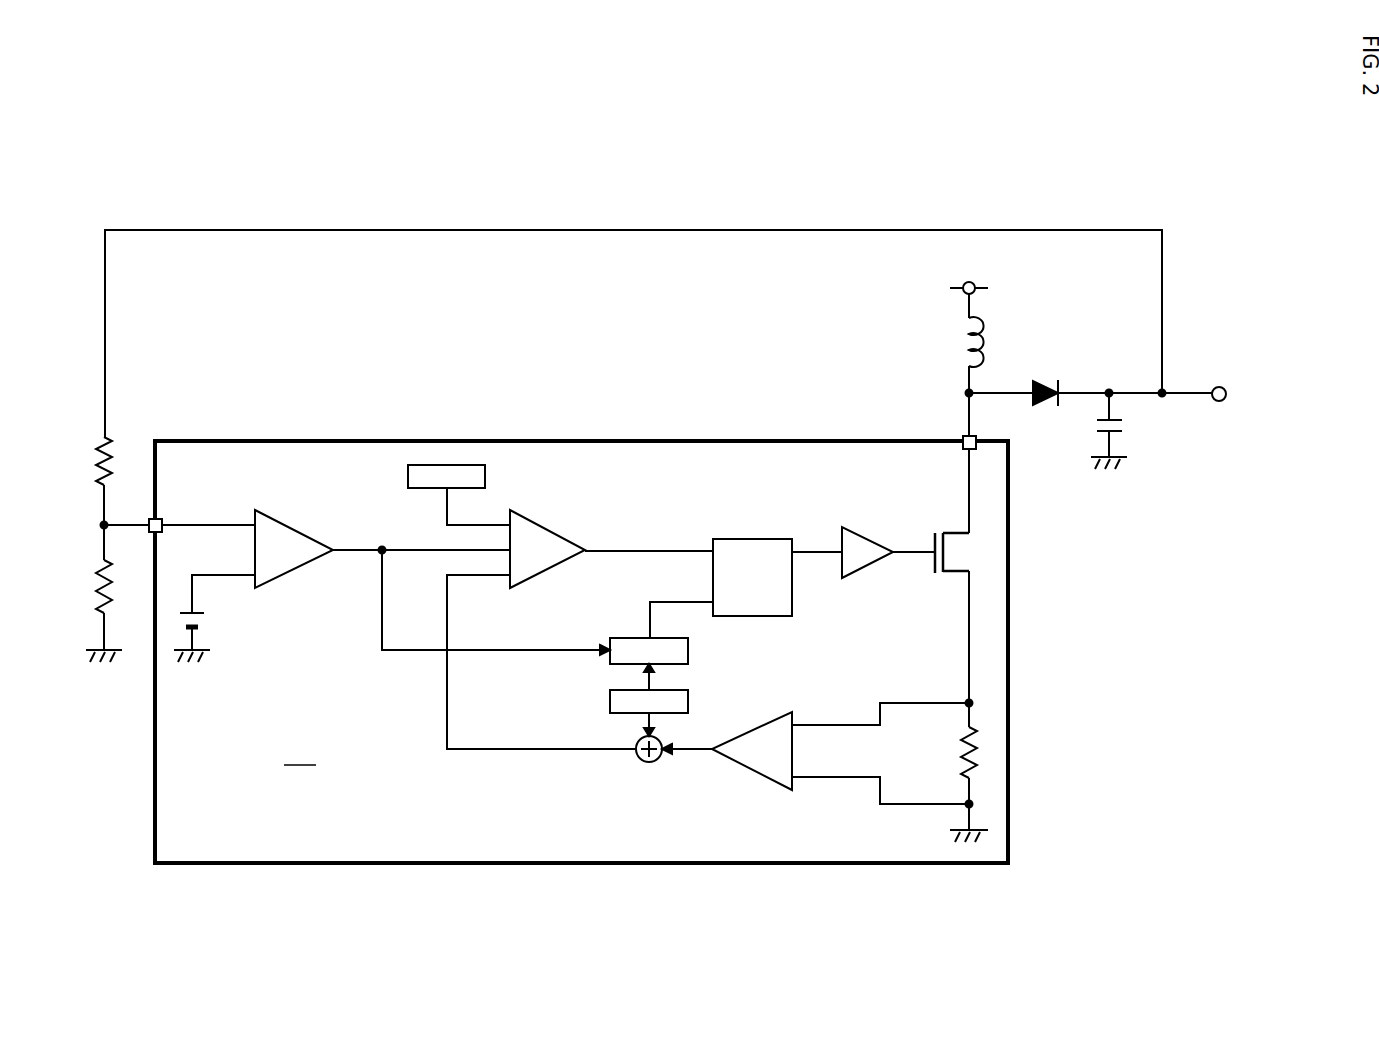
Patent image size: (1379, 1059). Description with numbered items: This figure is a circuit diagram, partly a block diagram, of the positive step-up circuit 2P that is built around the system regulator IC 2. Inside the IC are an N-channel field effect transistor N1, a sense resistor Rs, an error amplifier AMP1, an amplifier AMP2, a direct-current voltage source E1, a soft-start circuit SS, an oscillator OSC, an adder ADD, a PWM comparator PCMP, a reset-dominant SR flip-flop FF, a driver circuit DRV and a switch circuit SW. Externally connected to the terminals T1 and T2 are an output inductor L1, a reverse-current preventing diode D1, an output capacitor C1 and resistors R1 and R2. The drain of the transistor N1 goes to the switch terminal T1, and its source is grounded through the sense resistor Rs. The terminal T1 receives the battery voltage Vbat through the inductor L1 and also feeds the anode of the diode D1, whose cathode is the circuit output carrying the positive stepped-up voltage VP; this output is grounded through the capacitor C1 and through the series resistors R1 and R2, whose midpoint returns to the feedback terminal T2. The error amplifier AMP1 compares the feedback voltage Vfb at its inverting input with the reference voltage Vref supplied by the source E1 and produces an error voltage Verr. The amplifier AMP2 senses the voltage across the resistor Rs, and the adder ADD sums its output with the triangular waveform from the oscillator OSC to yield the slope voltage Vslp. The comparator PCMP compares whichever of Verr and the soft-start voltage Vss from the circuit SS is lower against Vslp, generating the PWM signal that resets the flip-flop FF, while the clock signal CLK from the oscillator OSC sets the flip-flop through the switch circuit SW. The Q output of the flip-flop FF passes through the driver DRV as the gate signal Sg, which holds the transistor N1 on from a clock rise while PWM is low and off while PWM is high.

The system regulator IC 2 is at (582, 440).
The positive step-up circuit 2P is at (300, 753).
The resistor R1 is at (91, 464).
The resistor R2 is at (91, 592).
The external terminal (switch terminal) T1 is at (962, 438).
The external terminal (feedback terminal) T2 is at (149, 519).
The direct-current voltage source E1 is at (205, 627).
The error amplifier AMP1 is at (319, 531).
The amplifier AMP2 is at (752, 774).
The PWM comparator PCMP is at (559, 531).
The soft-start circuit SS is at (446, 477).
The reset-dominant SR flip-flop FF is at (754, 537).
The driver circuit (buffer circuit) DRV is at (870, 539).
The N-channel field effect transistor N1 is at (948, 535).
The switch circuit SW is at (649, 651).
The oscillator OSC is at (649, 703).
The adder ADD is at (651, 763).
The sense resistor Rs is at (955, 753).
The output inductor L1 is at (956, 346).
The reverse-current preventing diode D1 is at (1049, 390).
The output capacitor C1 is at (1125, 427).
The battery voltage Vbat is at (968, 288).
The positive stepped-up voltage VP is at (1218, 383).
The feedback voltage Vfb is at (104, 531).
The reference voltage Vref is at (223, 582).
The error voltage Verr is at (421, 540).
The soft-start voltage Vss is at (478, 507).
The slope voltage Vslp is at (541, 662).
The PWM signal PWM is at (649, 541).
The clock signal CLK is at (669, 609).
The gate signal Sg is at (914, 567).